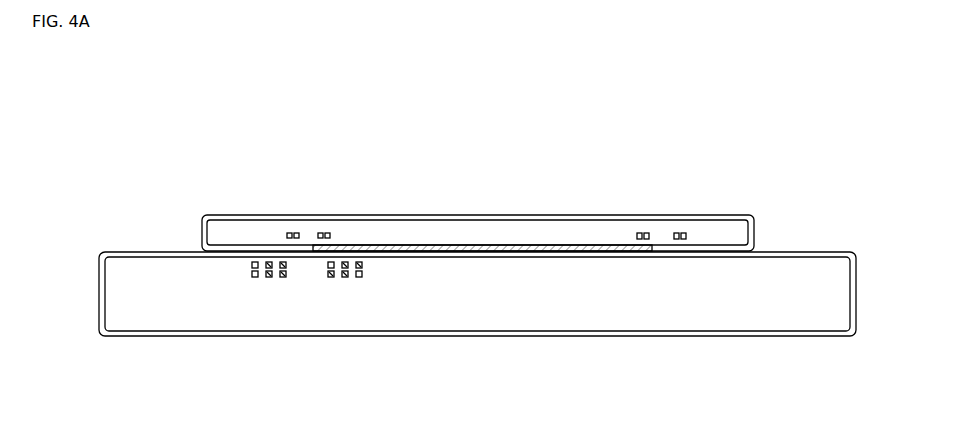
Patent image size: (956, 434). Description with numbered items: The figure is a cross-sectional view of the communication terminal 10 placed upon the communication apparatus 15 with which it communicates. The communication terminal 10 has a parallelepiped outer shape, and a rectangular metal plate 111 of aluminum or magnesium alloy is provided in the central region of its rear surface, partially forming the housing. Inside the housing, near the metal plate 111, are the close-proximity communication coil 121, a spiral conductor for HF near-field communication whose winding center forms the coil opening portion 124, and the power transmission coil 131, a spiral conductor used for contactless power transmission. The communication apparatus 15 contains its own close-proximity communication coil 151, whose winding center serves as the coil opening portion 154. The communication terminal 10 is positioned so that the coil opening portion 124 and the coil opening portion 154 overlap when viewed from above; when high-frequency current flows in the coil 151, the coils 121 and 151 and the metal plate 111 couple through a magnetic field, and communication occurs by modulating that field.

The communication terminal 10 is at (215, 205).
The communication apparatus 15 is at (125, 247).
The metal plate 111 is at (481, 245).
The close-proximity communication coil 121 is at (325, 228).
The coil opening portion 124 is at (305, 230).
The power transmission coil 131 is at (642, 230).
The close-proximity communication coil 151 is at (345, 277).
The coil opening portion 154 is at (303, 273).